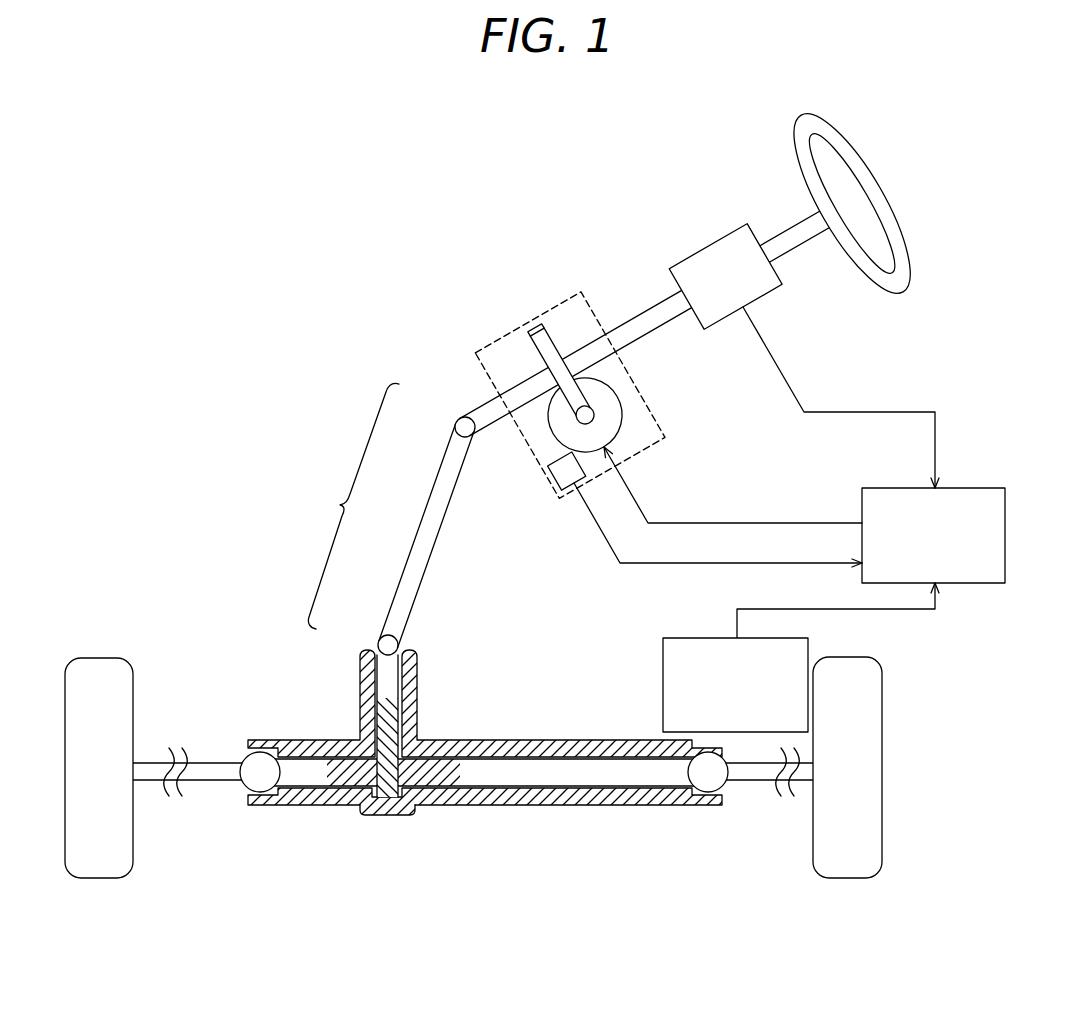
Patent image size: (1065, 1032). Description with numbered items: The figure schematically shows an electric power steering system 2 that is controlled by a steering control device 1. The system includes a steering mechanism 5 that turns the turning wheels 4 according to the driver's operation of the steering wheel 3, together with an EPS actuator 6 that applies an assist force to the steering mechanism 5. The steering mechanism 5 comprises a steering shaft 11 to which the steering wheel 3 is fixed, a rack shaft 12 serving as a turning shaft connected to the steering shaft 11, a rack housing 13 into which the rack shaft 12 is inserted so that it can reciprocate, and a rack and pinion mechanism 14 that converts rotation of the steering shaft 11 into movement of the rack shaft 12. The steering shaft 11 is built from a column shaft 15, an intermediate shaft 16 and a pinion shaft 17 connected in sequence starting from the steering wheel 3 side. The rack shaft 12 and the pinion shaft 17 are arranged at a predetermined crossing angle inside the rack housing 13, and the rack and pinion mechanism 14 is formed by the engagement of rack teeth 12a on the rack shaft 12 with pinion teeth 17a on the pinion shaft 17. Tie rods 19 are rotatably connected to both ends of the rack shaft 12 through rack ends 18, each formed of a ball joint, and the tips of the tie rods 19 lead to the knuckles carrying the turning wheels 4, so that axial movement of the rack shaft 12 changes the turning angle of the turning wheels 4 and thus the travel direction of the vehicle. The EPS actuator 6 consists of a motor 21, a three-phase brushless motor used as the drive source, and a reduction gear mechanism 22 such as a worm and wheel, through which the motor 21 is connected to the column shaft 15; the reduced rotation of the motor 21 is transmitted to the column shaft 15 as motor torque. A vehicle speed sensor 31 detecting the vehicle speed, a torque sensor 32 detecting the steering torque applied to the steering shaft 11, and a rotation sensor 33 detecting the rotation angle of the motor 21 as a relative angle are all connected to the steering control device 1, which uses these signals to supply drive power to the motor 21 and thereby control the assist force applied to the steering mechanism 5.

The steering control device 1 is at (1007, 522).
The electric power steering system 2 is at (212, 310).
The steering wheel 3 is at (890, 205).
The turning wheels 4 is at (98, 878).
The steering mechanism 5 is at (212, 593).
The EPS actuator 6 is at (563, 304).
The steering shaft 11 is at (582, 412).
The rack shaft 12 is at (487, 740).
The rack teeth 12a is at (333, 805).
The rack housing 13 is at (540, 740).
The rack and pinion mechanism 14 is at (413, 800).
The column shaft 15 is at (460, 410).
The intermediate shaft 16 is at (418, 537).
The pinion shaft 17 is at (378, 637).
The pinion teeth 17a is at (388, 812).
The rack ends 18 is at (242, 790).
The tie rods 19 is at (147, 782).
The motor 21 is at (614, 388).
The reduction gear mechanism 22 is at (572, 418).
The vehicle speed sensor 31 is at (688, 638).
The torque sensor 32 is at (698, 251).
The rotation sensor 33 is at (554, 482).